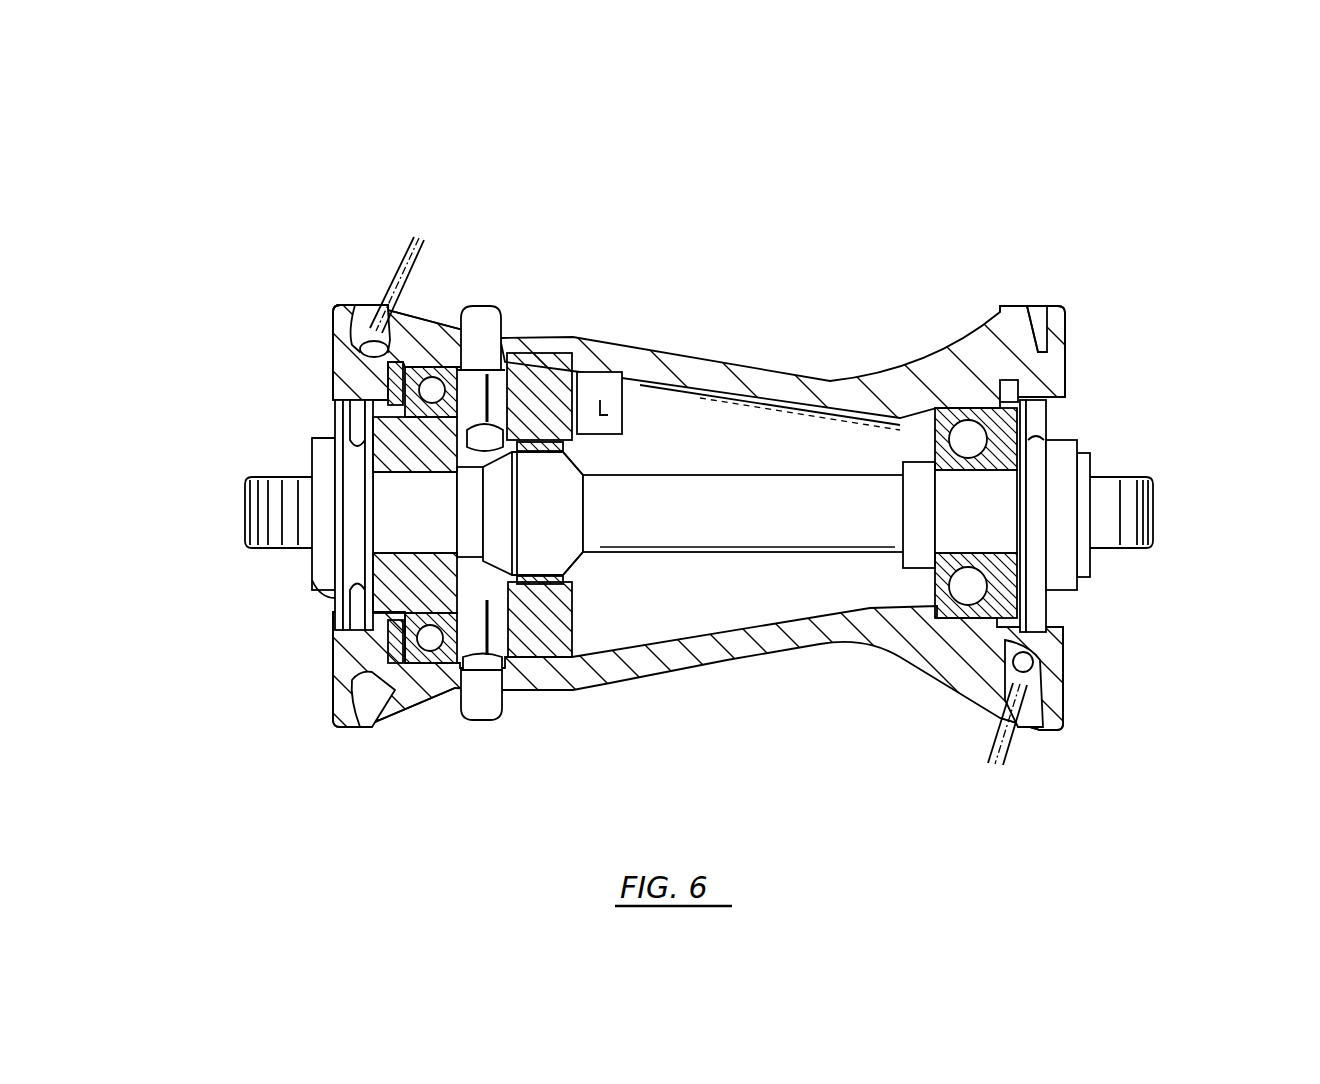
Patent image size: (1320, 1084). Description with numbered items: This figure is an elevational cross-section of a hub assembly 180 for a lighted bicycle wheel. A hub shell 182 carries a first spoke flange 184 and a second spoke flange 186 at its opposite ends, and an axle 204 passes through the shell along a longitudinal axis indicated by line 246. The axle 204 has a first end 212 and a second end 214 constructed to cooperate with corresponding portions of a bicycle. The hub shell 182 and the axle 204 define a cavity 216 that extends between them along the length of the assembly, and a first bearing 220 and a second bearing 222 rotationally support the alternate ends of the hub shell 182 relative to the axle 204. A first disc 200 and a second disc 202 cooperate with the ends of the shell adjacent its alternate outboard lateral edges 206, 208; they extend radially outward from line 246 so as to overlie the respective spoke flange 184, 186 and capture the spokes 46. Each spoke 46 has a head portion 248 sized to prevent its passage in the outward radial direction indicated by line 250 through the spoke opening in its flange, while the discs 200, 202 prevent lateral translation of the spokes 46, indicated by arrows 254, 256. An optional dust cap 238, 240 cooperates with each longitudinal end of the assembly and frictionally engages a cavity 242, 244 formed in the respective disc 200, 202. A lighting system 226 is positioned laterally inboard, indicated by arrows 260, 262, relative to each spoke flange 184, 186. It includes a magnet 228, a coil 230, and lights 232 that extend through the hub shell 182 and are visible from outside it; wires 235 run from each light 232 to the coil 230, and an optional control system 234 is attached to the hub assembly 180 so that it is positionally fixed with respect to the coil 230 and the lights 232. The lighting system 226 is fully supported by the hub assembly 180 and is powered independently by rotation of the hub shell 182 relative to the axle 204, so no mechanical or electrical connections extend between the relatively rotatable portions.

The spoke 46 is at (406, 238).
The hub assembly 180 is at (772, 272).
The hub shell 182 is at (825, 390).
The first spoke flange 184 is at (343, 303).
The second spoke flange 186 is at (1028, 306).
The first disc 200 is at (333, 328).
The second disc 202 is at (1062, 312).
The axle 204 is at (690, 516).
The outboard lateral edge 206 is at (333, 680).
The outboard lateral edge 208 is at (1065, 694).
The first end 212 is at (1170, 470).
The second end 214 is at (258, 463).
The cavity 216 is at (752, 412).
The first bearing 220 is at (437, 660).
The second bearing 222 is at (950, 612).
The lighting system 226 is at (660, 236).
The magnet 228 is at (560, 446).
The coil 230 is at (575, 355).
The light 232 is at (513, 310).
The control system 234 is at (606, 416).
The wire 235 is at (490, 620).
The dust cap 238 is at (333, 590).
The dust cap 240 is at (1062, 440).
The cavity 242 is at (335, 625).
The cavity 244 is at (1047, 634).
The longitudinal axis 246 is at (236, 509).
The head portion 248 is at (388, 358).
The outward radial direction 250 is at (433, 253).
The lateral translation arrow 254 is at (417, 164).
The lateral translation arrow 256 is at (1018, 222).
The laterally inboard arrow 260 is at (503, 133).
The laterally inboard arrow 262 is at (978, 168).